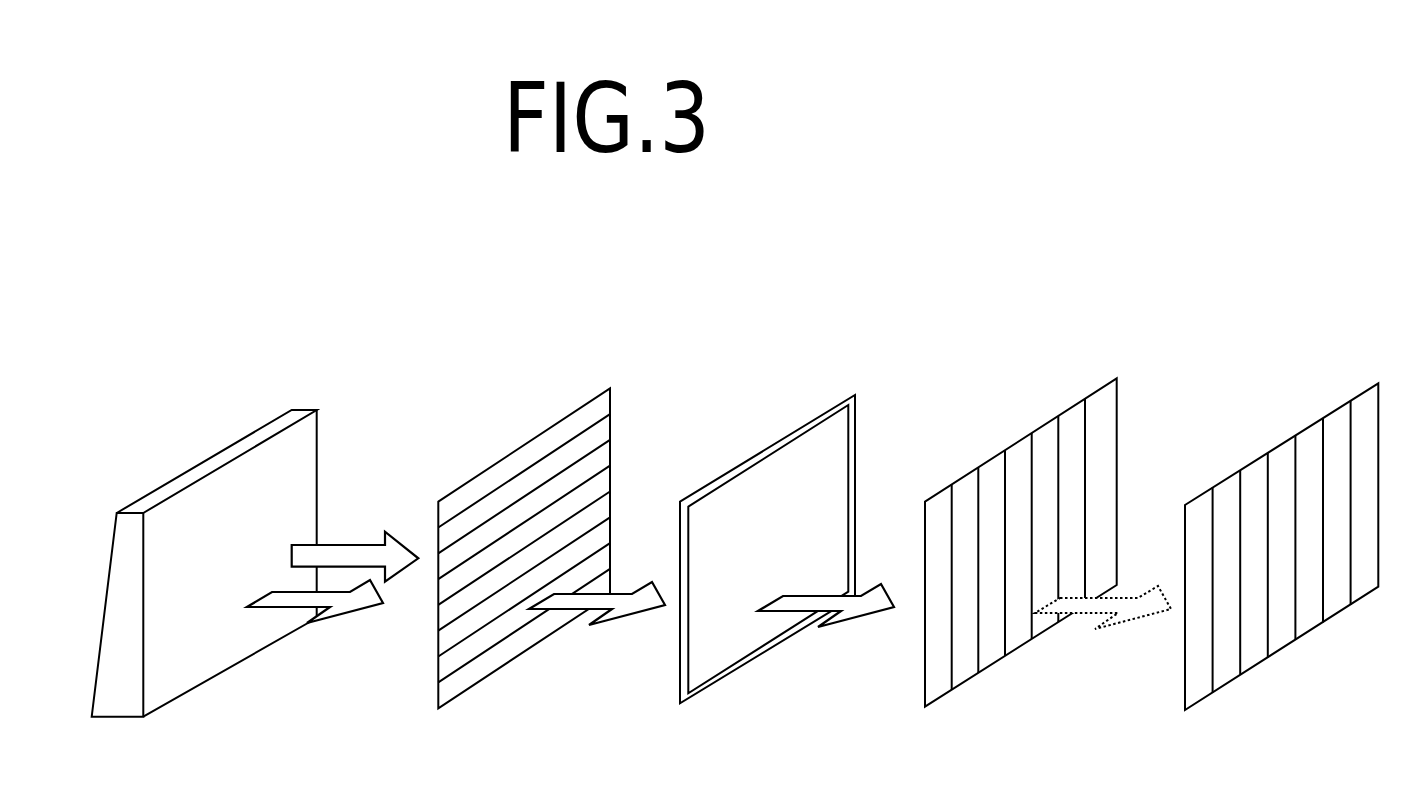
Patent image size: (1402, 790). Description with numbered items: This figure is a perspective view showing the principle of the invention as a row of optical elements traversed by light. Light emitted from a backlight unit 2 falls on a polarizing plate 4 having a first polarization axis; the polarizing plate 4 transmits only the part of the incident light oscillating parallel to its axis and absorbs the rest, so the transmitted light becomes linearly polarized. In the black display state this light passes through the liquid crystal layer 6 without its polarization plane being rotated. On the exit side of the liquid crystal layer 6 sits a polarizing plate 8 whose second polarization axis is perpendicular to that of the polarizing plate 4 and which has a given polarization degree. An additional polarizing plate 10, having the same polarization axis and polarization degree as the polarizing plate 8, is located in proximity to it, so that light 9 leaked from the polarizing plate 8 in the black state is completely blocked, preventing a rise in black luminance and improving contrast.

The backlight unit 2 is at (232, 450).
The polarizing plate 4 is at (513, 458).
The liquid crystal layer 6 is at (758, 457).
The polarizing plate 8 is at (1020, 447).
The light 9 is at (1090, 617).
The additional polarizing plate 10 is at (1283, 453).